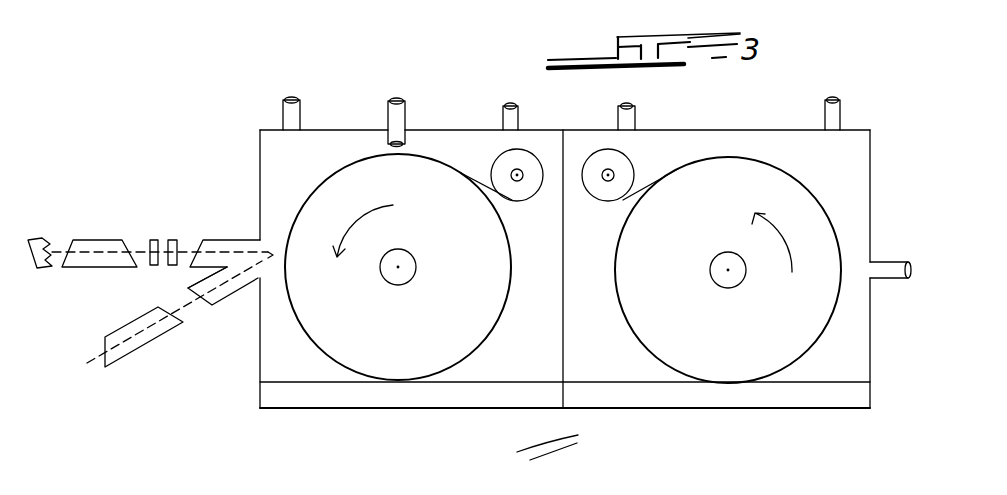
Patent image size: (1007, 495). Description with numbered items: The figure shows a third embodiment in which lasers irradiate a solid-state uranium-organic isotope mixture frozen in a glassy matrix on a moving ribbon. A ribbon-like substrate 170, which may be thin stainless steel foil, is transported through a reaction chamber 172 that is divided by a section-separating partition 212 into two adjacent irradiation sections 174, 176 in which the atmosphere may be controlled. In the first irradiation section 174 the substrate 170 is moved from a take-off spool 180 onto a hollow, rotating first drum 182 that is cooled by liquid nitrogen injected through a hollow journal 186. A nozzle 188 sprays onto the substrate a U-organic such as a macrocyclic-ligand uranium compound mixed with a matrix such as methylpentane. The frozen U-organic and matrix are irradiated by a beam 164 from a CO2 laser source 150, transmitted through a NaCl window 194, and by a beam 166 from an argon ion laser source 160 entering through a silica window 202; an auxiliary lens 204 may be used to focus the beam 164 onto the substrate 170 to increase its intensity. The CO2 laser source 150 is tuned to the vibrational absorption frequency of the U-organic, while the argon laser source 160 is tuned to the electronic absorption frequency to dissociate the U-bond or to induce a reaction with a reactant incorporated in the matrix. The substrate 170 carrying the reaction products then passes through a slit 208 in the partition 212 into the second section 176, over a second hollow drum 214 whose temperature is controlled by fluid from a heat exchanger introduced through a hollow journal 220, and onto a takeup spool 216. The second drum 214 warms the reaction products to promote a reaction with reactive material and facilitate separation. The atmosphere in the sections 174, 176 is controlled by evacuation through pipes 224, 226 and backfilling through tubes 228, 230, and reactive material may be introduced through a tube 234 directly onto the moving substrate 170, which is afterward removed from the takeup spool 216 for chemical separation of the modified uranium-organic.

The CO2 laser source 150 is at (110, 240).
The laser beam 164 is at (139, 246).
The auxiliary lens 204 is at (173, 242).
The NaCl window 194 is at (193, 249).
The silica window 202 is at (193, 285).
The laser beam 166 is at (193, 303).
The argon ion laser source 160 is at (152, 345).
The first irradiation section 174 is at (273, 372).
The second irradiation section 176 is at (862, 368).
The ribbon-like substrate 170 is at (495, 385).
The slit 208 is at (563, 385).
The section-separating partition 212 is at (562, 308).
The reaction chamber 172 is at (717, 117).
The first drum 182 is at (343, 348).
The hollow journal 186 is at (403, 285).
The second hollow drum 214 is at (807, 333).
The hollow journal 220 is at (714, 283).
The take-off spool 180 is at (528, 148).
The takeup spool 216 is at (596, 149).
The evacuation pipe 224 is at (302, 110).
The nozzle 188 is at (407, 112).
The backfilling tube 228 is at (502, 112).
The backfilling tube 230 is at (635, 120).
The evacuation pipe 226 is at (842, 118).
The tube 234 is at (890, 260).